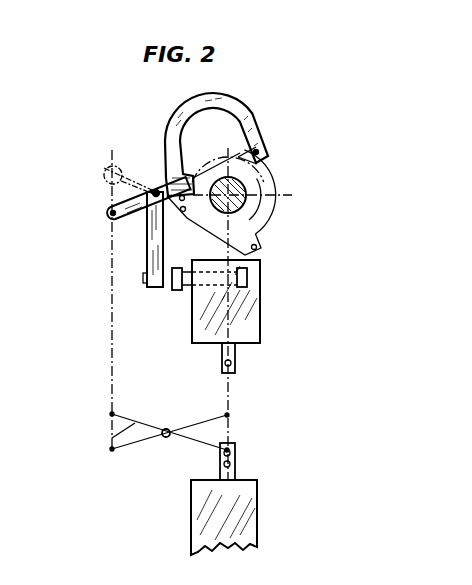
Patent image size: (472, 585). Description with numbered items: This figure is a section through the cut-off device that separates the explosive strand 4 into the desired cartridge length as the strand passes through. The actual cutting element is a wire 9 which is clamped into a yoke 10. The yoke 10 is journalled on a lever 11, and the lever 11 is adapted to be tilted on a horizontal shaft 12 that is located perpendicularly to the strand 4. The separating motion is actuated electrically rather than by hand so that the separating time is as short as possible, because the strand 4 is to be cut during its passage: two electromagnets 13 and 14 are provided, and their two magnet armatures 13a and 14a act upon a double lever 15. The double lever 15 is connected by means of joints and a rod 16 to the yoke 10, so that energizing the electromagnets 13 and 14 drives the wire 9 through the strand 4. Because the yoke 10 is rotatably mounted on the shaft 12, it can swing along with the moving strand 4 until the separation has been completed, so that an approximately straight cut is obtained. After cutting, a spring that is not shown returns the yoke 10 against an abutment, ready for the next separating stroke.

The strand 4 is at (247, 187).
The wire 9 is at (238, 157).
The yoke 10 is at (247, 123).
The lever 11 is at (157, 240).
The horizontal shaft 12 is at (170, 284).
The electromagnet 13 is at (200, 333).
The magnet armature 13a is at (237, 356).
The electromagnet 14 is at (257, 505).
The magnet armature 14a is at (235, 467).
The double lever 15 is at (111, 438).
The rod 16 is at (112, 383).